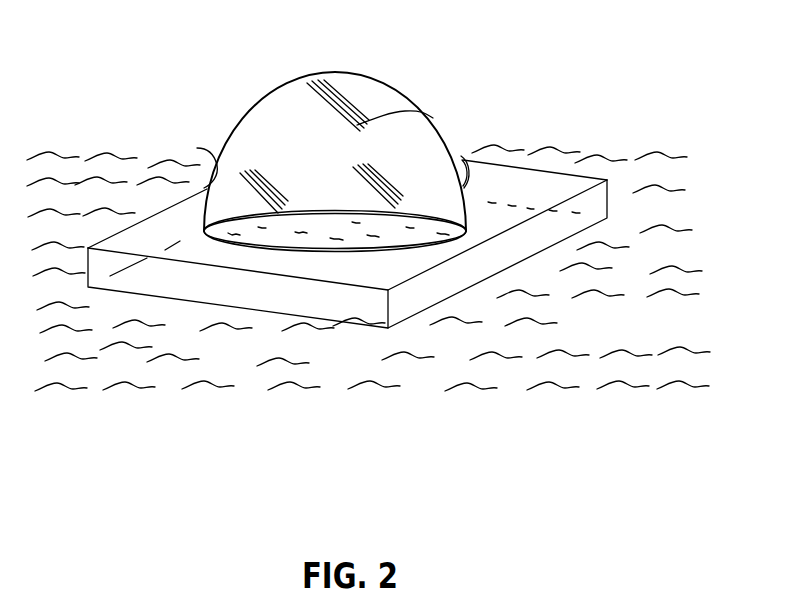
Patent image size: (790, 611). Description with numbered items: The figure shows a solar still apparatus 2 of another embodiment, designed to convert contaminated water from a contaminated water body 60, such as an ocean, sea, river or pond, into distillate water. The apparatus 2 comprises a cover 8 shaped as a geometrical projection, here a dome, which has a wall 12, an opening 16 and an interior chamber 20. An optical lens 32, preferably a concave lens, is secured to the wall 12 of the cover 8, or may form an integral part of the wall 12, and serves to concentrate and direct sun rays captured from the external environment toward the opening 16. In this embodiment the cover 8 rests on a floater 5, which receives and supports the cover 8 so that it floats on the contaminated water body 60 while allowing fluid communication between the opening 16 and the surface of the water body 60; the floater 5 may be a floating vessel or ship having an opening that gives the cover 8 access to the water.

The solar still apparatus 2 is at (207, 93).
The floater 5 is at (163, 223).
The cover 8 is at (402, 58).
The wall 12 is at (399, 92).
The opening 16 is at (377, 220).
The chamber 20 is at (433, 118).
The optical lens 32 is at (197, 148).
The contaminated water body 60 is at (572, 330).